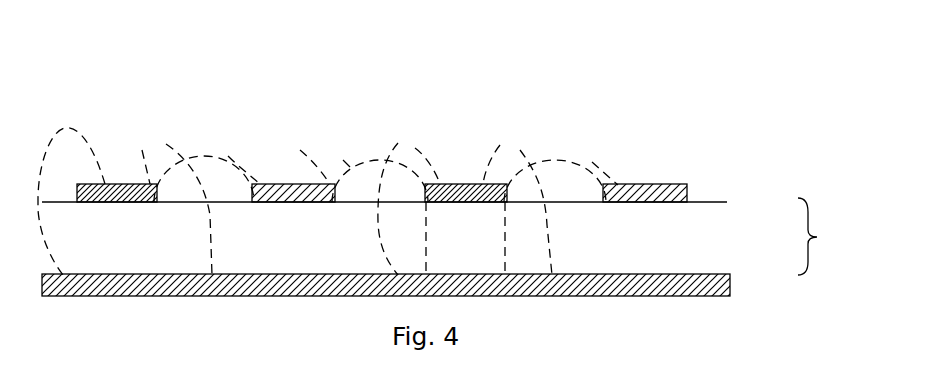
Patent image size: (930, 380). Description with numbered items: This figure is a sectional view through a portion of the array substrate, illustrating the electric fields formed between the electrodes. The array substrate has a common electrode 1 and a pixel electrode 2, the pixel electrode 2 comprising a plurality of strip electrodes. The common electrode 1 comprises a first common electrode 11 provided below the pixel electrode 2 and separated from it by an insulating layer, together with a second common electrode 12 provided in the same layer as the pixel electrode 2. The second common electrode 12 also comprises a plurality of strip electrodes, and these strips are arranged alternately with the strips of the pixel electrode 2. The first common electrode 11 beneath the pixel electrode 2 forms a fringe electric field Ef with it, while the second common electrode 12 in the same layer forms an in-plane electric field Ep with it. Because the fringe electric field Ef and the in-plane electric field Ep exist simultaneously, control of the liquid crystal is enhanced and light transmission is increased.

The common electrode 1 is at (823, 236).
The first common electrode 11 is at (680, 270).
The second common electrode 12 is at (727, 202).
The pixel electrode 2 is at (472, 185).
The fringe electric field Ef is at (165, 143).
The in-plane electric field Ep is at (350, 160).